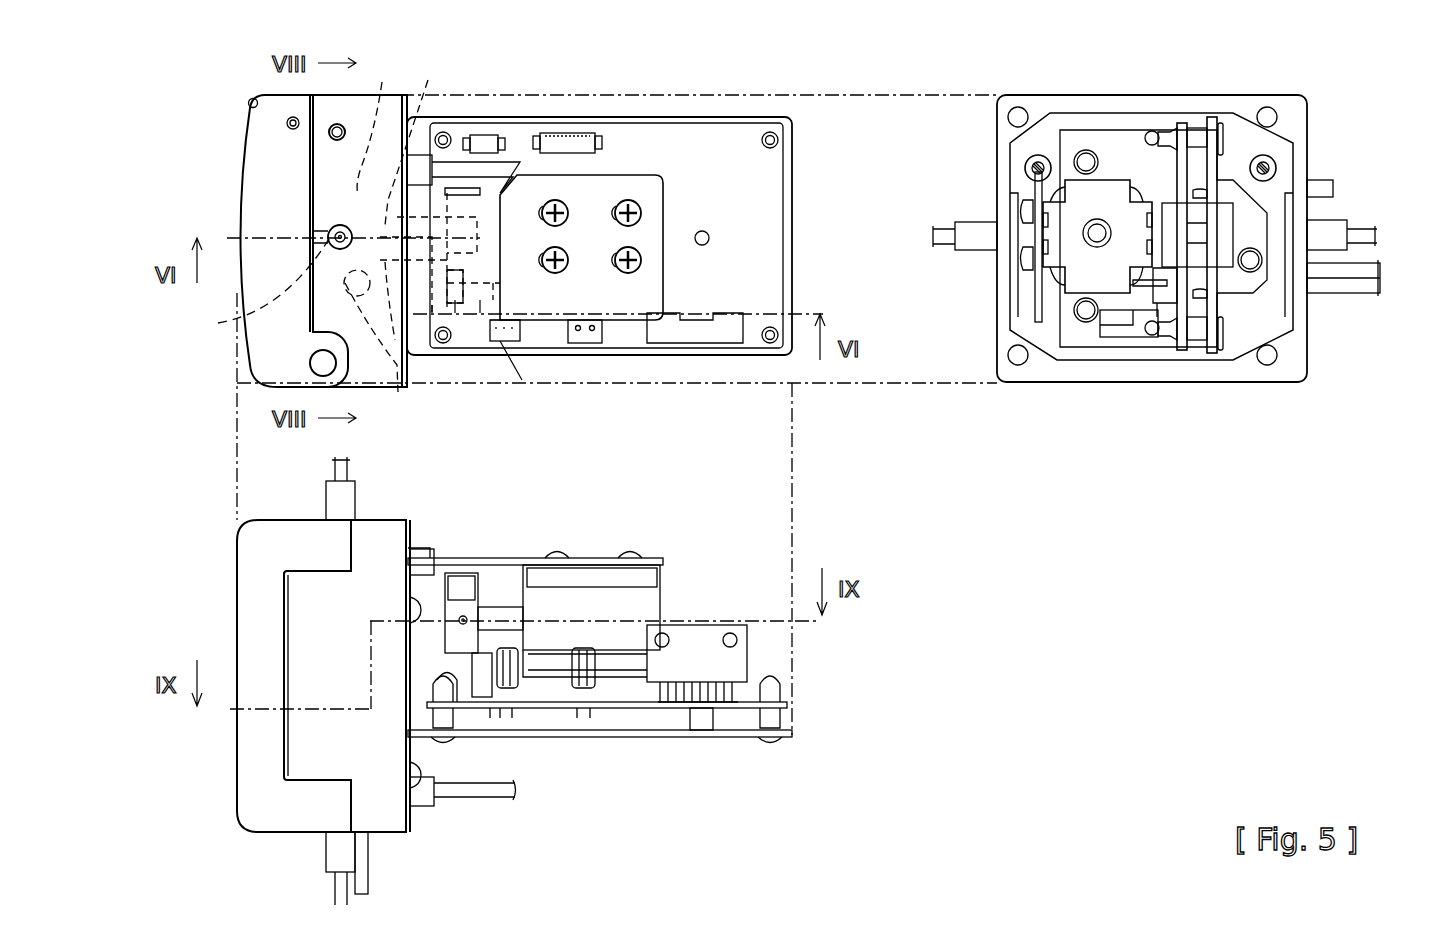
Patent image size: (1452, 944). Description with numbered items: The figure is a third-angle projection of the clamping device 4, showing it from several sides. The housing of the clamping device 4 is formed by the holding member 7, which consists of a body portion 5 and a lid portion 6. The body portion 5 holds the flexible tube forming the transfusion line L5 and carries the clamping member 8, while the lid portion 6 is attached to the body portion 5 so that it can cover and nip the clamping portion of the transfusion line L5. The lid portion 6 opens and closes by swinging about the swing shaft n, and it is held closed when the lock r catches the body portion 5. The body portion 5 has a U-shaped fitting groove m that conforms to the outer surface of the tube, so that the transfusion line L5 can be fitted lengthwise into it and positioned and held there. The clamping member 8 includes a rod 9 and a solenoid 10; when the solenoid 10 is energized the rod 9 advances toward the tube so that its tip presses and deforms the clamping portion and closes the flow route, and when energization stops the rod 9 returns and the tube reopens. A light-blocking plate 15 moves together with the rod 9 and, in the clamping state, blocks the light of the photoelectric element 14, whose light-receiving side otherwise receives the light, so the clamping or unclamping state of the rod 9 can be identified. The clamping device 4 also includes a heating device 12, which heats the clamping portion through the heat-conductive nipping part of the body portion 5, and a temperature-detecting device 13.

The clamping device 4 is at (1440, 135).
The body portion 5 is at (330, 142).
The lid portion 6 is at (258, 177).
The holding member 7 is at (140, 125).
The clamping member 8 is at (488, 188).
The rod 9 is at (420, 135).
The solenoid 10 is at (1110, 187).
The heating device 12 is at (1343, 290).
The temperature-detecting device 13 is at (383, 82).
The photoelectric element 14 is at (460, 340).
The light-blocking plate 15 is at (505, 345).
The transfusion line L5 is at (328, 233).
The lock r is at (248, 103).
The fitting groove m is at (263, 287).
The swing shaft n is at (318, 362).